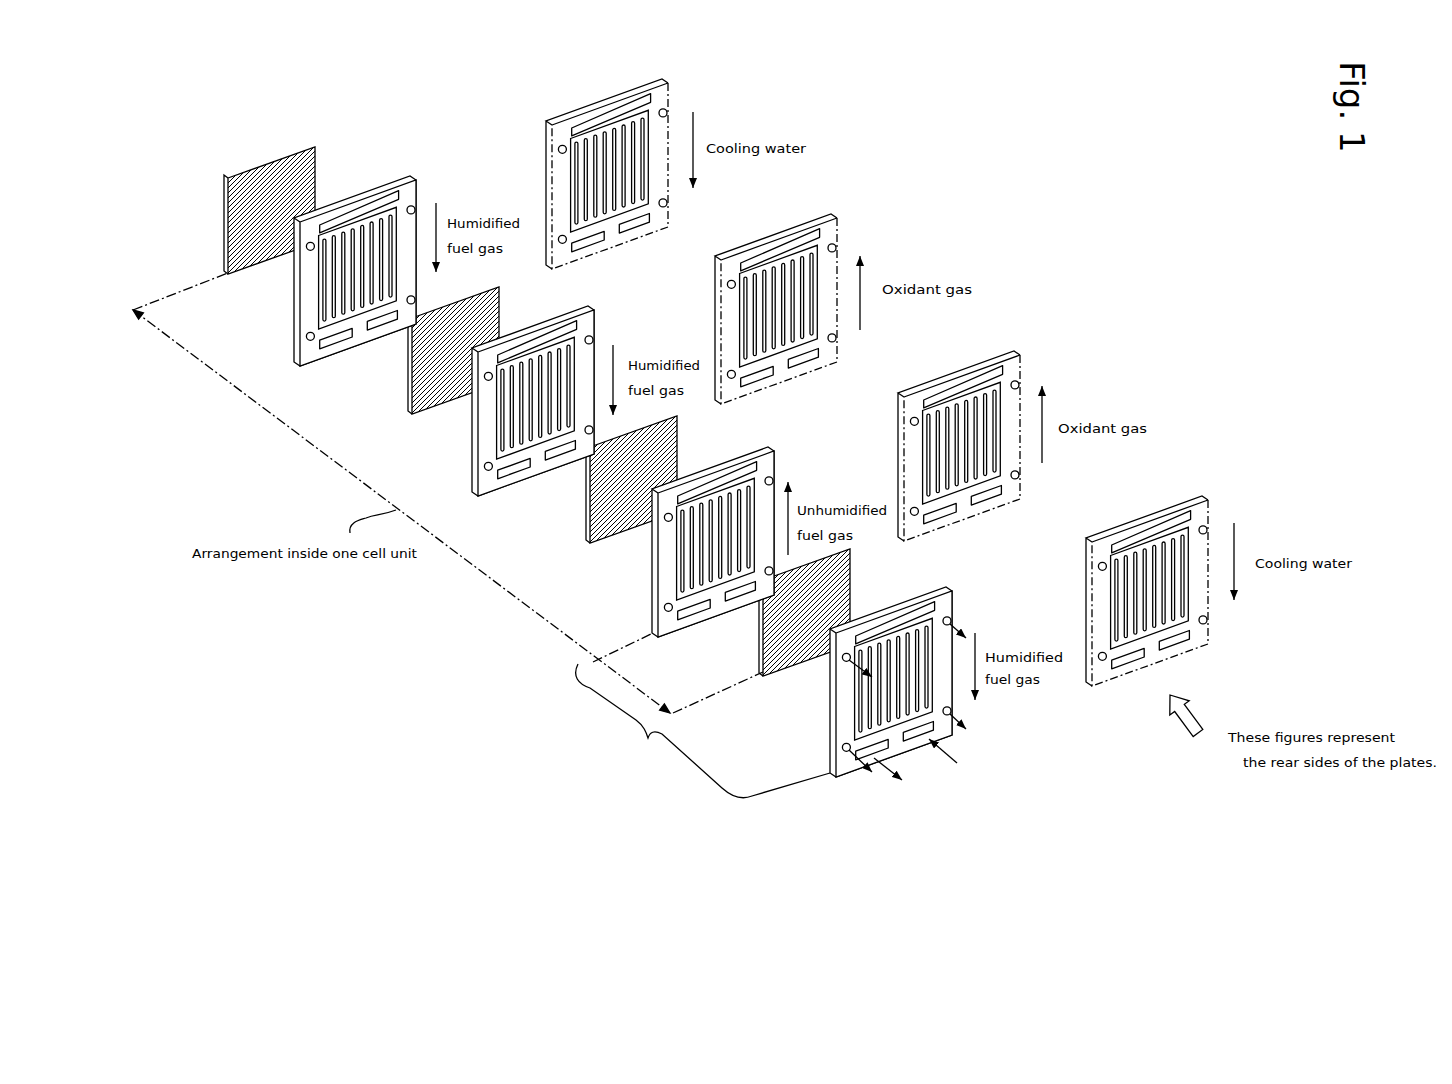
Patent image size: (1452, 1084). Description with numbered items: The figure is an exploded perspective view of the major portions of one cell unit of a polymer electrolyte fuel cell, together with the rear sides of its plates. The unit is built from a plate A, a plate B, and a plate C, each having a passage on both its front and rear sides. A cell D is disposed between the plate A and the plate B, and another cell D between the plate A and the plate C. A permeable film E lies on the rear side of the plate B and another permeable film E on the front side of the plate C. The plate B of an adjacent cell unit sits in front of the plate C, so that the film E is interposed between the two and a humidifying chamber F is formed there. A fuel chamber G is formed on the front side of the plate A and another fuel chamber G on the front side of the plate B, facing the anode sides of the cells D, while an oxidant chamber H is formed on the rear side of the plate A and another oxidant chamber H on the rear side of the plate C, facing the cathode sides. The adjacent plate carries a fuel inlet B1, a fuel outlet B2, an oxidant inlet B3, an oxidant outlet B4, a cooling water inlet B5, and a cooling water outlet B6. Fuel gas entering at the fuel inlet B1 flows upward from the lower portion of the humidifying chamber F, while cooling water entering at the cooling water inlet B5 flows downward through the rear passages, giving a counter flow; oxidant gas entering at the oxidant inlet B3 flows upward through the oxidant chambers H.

The plate A is at (596, 314).
The plate B is at (418, 186).
The plate C is at (776, 457).
The cell D is at (406, 392).
The permeable film E is at (262, 260).
The humidifying chamber F is at (635, 731).
The fuel chamber G is at (374, 363).
The oxidant chamber H is at (456, 440).
The fuel inlet B1 is at (943, 752).
The fuel outlet B2 is at (874, 760).
The oxidant inlet B3 is at (849, 756).
The oxidant outlet B4 is at (951, 628).
The cooling water inlet B5 is at (847, 663).
The cooling water outlet B6 is at (950, 715).